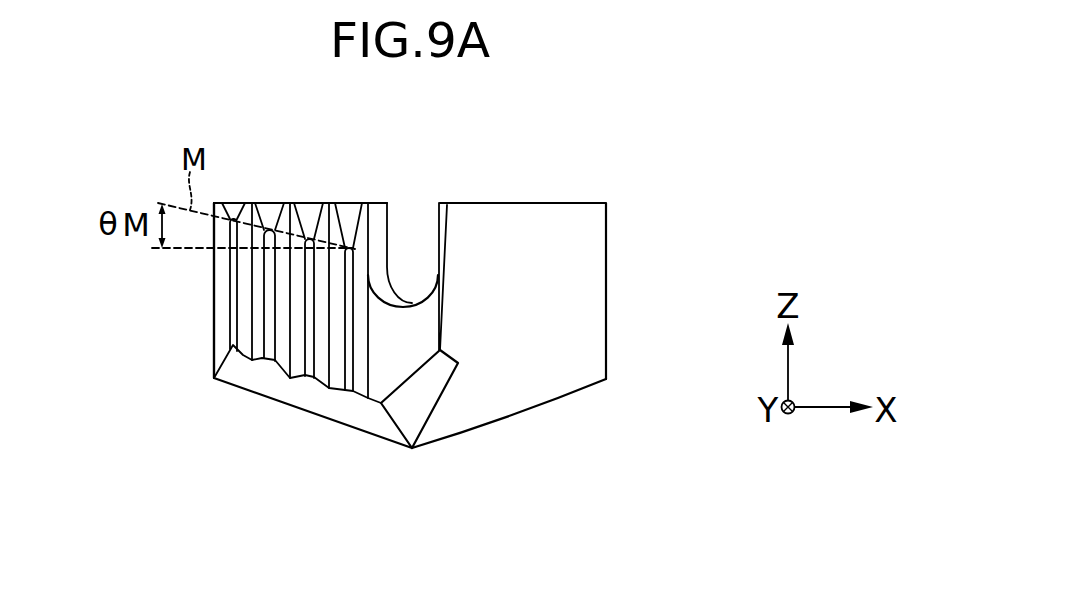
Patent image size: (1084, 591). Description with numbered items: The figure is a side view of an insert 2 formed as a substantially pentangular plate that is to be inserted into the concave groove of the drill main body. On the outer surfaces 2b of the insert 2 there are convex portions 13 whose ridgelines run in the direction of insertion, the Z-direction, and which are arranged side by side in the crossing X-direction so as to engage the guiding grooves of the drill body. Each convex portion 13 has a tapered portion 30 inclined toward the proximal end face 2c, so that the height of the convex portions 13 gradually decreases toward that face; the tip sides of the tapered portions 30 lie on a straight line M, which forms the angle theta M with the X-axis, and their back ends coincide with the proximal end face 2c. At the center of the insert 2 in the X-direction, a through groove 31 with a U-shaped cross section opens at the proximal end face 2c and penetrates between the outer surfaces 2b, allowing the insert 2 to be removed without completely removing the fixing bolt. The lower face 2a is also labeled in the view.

The insert 2 is at (636, 250).
The bottom surface 2a is at (532, 405).
The outer surfaces 2b is at (238, 278).
The proximal end face 2c is at (356, 204).
The convex portions 13 is at (268, 323).
The tapered portions 30 is at (347, 207).
The through groove 31 is at (415, 223).